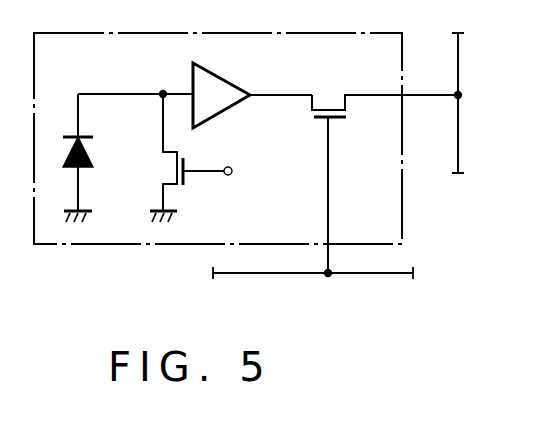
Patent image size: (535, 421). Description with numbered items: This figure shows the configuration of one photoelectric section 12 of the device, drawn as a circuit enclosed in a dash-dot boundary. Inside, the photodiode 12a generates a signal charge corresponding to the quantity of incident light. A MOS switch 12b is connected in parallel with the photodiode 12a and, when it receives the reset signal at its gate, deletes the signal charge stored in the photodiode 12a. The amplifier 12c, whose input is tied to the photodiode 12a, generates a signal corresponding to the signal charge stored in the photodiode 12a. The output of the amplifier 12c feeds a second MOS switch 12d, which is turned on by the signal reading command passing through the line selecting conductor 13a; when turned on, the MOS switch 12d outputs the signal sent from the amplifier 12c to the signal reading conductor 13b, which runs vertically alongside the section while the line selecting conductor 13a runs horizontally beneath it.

The photoelectric section 12 is at (314, 50).
The photodiode 12a is at (94, 151).
The MOS switch 12b is at (170, 169).
The amplifier 12c is at (226, 82).
The MOS switch 12d is at (318, 116).
The line selecting conductor 13a is at (374, 276).
The signal reading conductor 13b is at (460, 153).